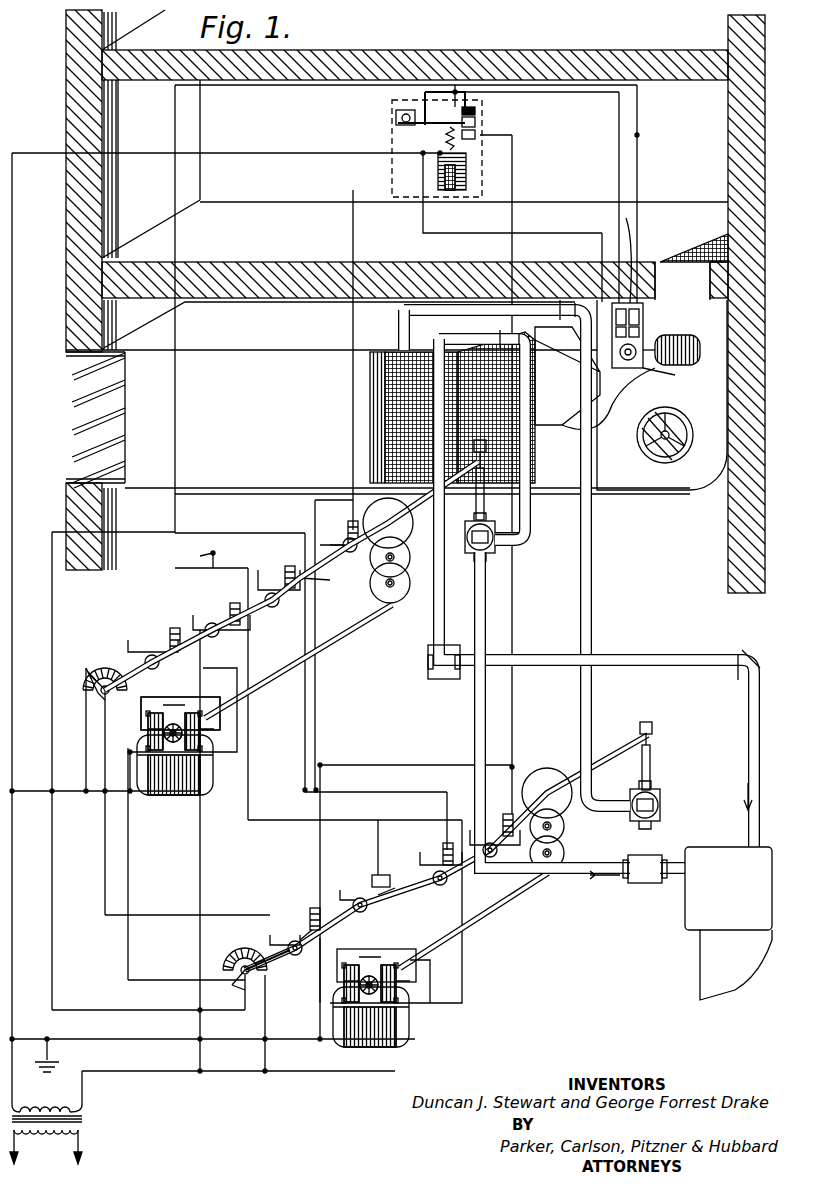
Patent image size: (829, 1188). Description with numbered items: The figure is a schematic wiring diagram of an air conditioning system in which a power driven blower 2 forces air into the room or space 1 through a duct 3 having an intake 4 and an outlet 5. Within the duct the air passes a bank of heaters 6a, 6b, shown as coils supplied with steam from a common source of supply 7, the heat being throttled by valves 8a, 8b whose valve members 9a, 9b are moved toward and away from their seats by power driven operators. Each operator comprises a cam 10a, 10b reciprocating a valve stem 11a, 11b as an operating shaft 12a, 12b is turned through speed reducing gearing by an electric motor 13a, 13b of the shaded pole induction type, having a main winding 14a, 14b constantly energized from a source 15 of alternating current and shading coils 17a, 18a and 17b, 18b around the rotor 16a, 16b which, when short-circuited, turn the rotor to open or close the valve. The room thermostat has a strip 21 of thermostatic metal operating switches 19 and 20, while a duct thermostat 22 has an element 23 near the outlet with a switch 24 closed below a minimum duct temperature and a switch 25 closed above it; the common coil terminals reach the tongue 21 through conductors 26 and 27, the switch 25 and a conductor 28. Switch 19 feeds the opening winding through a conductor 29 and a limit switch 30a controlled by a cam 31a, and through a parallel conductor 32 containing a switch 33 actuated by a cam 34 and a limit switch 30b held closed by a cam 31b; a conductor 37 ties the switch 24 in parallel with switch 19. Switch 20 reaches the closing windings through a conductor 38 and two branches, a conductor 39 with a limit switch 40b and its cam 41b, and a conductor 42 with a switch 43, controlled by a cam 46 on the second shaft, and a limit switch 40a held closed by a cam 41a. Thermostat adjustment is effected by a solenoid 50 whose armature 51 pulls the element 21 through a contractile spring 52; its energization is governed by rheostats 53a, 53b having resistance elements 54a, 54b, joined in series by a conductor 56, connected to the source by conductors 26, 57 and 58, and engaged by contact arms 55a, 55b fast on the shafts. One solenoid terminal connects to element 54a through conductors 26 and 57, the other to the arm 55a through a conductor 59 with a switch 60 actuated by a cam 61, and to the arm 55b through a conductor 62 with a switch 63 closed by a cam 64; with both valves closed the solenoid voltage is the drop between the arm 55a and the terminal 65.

The room or space 1 is at (146, 110).
The power driven blower 2 is at (655, 455).
The duct 3 is at (241, 370).
The intake 4 is at (72, 420).
The outlet 5 is at (696, 235).
The heater 6a is at (520, 392).
The heater 6b is at (390, 395).
The common source of supply 7 is at (708, 885).
The valve 8a is at (486, 560).
The valve 8b is at (670, 777).
The valve member 9a is at (462, 550).
The valve member 9b is at (662, 806).
The cam 10a is at (484, 492).
The cam 10b is at (652, 745).
The valve stem 11a is at (474, 500).
The valve stem 11b is at (644, 770).
The operating shaft 12a is at (391, 550).
The operating shaft 12b is at (622, 748).
The electric motor 13a is at (212, 784).
The electric motor 13b is at (417, 1034).
The main winding 14a is at (170, 796).
The main winding 14b is at (372, 1047).
The source of alternating current 15 is at (85, 1102).
The rotor 16a is at (176, 724).
The rotor 16b is at (372, 975).
The shading coils 17a is at (200, 727).
The shading coils 17b is at (344, 995).
The shading coils 18a is at (158, 712).
The shading coils 18b is at (342, 975).
The switch 19 is at (477, 112).
The switch 20 is at (477, 124).
The strip of thermostatic metal 21 is at (432, 124).
The duct thermostat 22 is at (653, 376).
The element 23 is at (696, 340).
The switch 24 is at (645, 300).
The switch 25 is at (627, 225).
The conductor 26 is at (290, 160).
The conductor 27 is at (452, 240).
The conductor 28 is at (619, 160).
The conductor 29 is at (311, 84).
The switch 30a is at (166, 640).
The switch 30b is at (438, 852).
The cam 31a is at (170, 663).
The cam 31b is at (441, 885).
The conductor 32 is at (440, 922).
The switch 33 is at (282, 576).
The cam 34 is at (275, 607).
The conductor 37 is at (638, 136).
The conductor 38 is at (512, 196).
The conductor 39 is at (462, 900).
The limit switch 40a is at (230, 614).
The limit switch 40b is at (500, 820).
The cam 41a is at (216, 638).
The cam 41b is at (496, 856).
The conductor 42 is at (249, 769).
The switch 43 is at (368, 888).
The cam 46 is at (368, 906).
The solenoid 50 is at (458, 178).
The armature 51 is at (466, 160).
The contractile spring 52 is at (456, 142).
The rheostat 53a is at (88, 668).
The rheostat 53b is at (270, 962).
The resistance element 54a is at (116, 676).
The resistance element 54b is at (236, 962).
The contact arm 55a is at (96, 702).
The contact arm 55b is at (240, 988).
The conductor 56 is at (126, 876).
The conductor 57 is at (86, 772).
The conductor 58 is at (276, 1060).
The conductor 59 is at (353, 228).
The switch 60 is at (306, 924).
The cam 61 is at (303, 950).
The conductor 62 is at (52, 963).
The switch 63 is at (346, 540).
The cam 64 is at (330, 561).
The terminal 65 is at (86, 680).